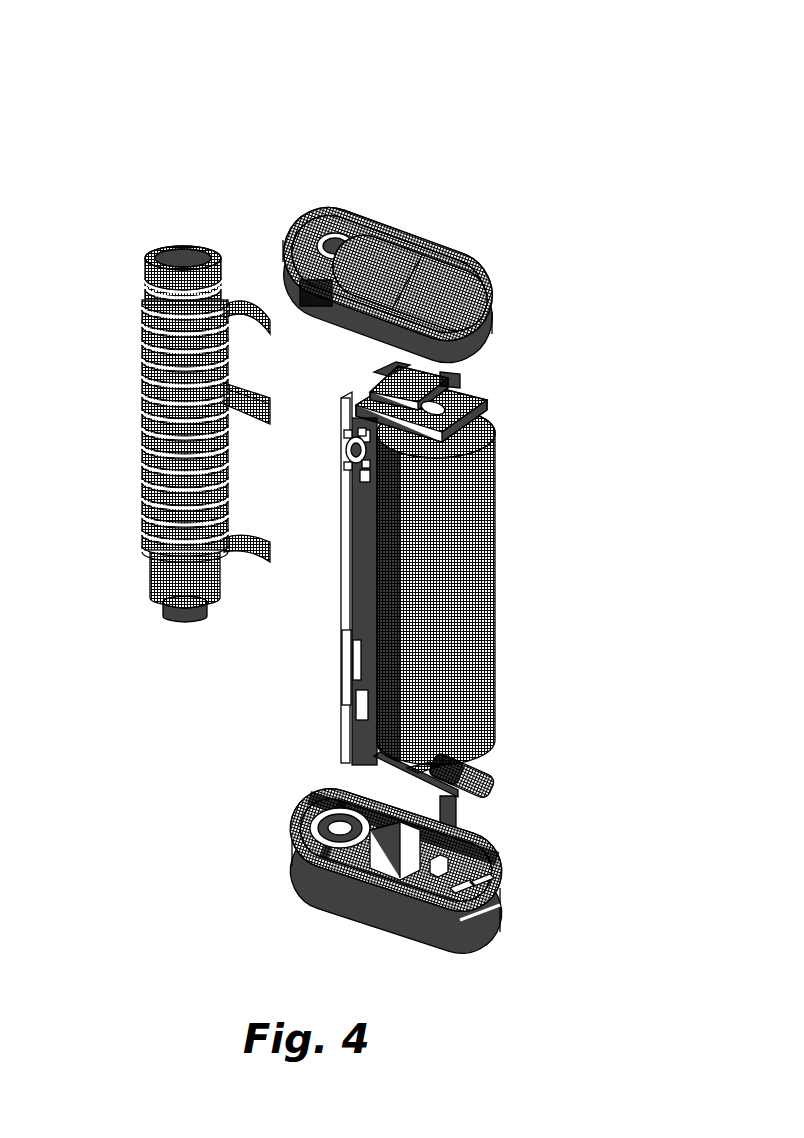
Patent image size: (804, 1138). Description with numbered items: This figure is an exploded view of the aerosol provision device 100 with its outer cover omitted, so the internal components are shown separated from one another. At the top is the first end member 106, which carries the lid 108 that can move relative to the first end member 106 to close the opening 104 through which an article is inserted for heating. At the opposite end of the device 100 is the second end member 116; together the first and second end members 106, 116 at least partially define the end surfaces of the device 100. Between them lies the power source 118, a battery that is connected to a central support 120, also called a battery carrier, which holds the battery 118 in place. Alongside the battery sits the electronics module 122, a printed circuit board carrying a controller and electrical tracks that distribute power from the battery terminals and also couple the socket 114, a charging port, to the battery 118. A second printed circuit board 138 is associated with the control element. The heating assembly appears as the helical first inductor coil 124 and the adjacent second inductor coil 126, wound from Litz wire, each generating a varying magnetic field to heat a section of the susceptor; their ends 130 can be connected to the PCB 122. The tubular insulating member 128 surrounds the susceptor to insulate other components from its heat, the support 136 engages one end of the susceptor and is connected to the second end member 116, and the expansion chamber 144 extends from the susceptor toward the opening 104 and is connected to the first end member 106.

The aerosol provision device 100 is at (428, 56).
The opening 104 is at (333, 240).
The first end member 106 is at (478, 284).
The lid 108 is at (412, 262).
The socket 114 is at (480, 778).
The second end member 116 is at (314, 882).
The power source 118 is at (492, 630).
The central support 120 is at (366, 664).
The electronics module 122 is at (346, 604).
The first inductor coil 124 is at (148, 346).
The second inductor coil 126 is at (146, 526).
The insulating member 128 is at (148, 303).
The ends 130 is at (268, 325).
The support 136 is at (165, 614).
The second printed circuit board 138 is at (348, 456).
The expansion chamber 144 is at (148, 264).